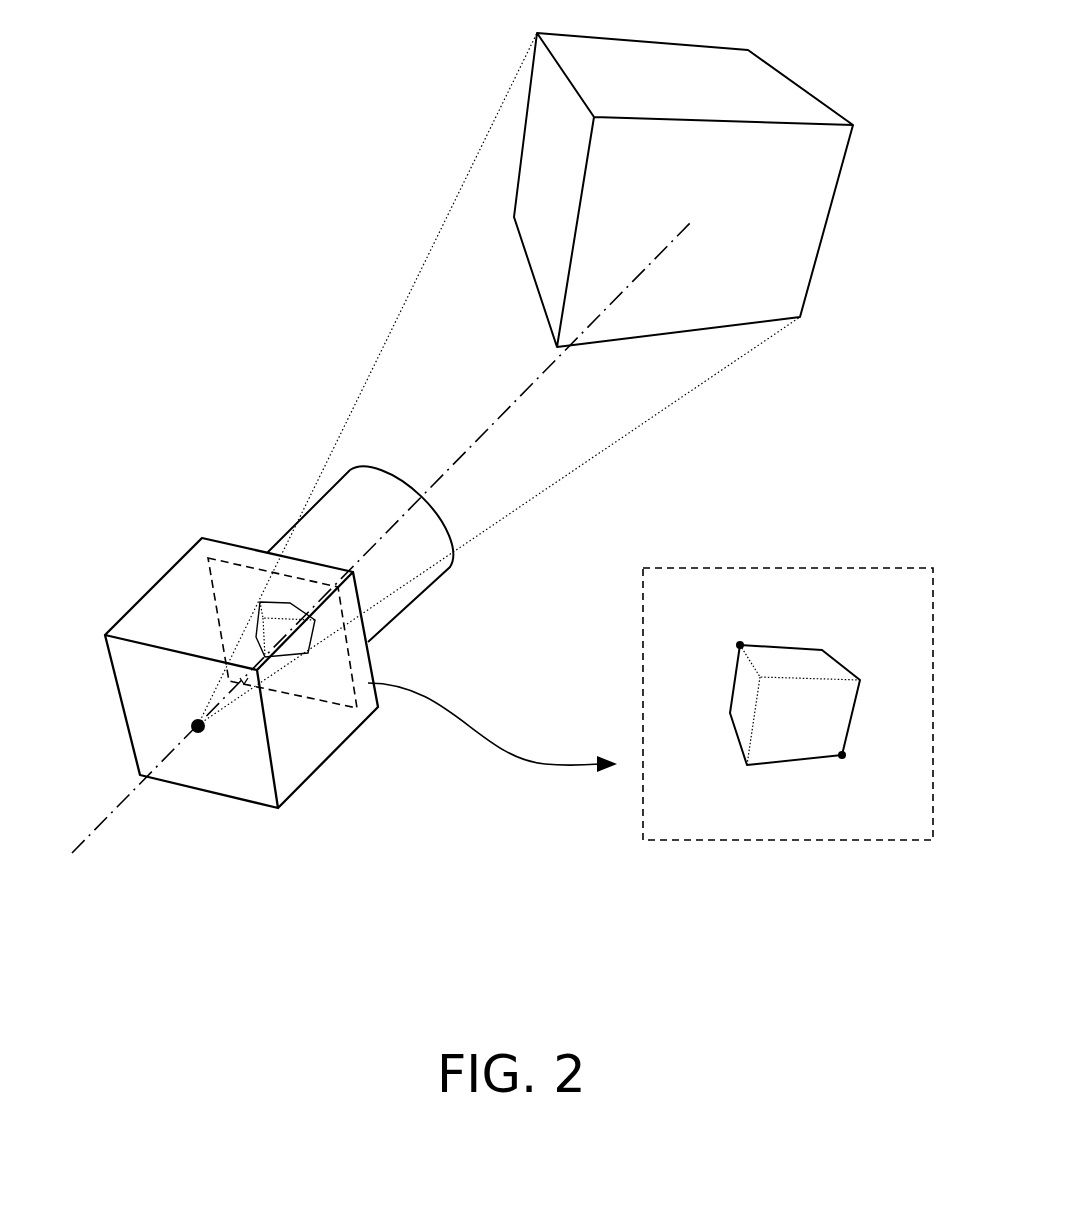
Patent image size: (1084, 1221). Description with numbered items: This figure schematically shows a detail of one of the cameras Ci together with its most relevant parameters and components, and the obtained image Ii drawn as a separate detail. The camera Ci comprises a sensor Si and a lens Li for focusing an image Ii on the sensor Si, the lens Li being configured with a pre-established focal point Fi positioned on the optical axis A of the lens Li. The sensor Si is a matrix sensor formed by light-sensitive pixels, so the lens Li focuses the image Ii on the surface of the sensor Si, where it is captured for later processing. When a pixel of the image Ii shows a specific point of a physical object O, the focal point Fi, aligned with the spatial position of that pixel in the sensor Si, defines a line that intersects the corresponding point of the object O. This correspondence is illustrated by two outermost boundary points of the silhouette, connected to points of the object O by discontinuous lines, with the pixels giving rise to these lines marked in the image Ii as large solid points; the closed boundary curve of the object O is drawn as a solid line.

The physical object O is at (668, 62).
The optical axis A is at (100, 822).
The camera Ci is at (318, 752).
The lens Li is at (323, 517).
The sensor Si is at (640, 607).
The focal point Fi is at (203, 735).
The image Ii is at (697, 787).